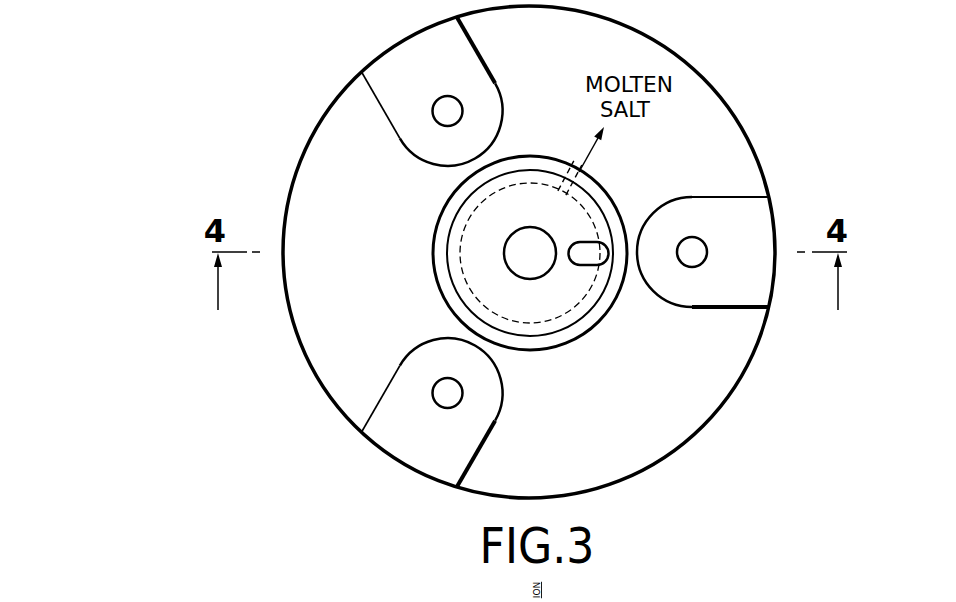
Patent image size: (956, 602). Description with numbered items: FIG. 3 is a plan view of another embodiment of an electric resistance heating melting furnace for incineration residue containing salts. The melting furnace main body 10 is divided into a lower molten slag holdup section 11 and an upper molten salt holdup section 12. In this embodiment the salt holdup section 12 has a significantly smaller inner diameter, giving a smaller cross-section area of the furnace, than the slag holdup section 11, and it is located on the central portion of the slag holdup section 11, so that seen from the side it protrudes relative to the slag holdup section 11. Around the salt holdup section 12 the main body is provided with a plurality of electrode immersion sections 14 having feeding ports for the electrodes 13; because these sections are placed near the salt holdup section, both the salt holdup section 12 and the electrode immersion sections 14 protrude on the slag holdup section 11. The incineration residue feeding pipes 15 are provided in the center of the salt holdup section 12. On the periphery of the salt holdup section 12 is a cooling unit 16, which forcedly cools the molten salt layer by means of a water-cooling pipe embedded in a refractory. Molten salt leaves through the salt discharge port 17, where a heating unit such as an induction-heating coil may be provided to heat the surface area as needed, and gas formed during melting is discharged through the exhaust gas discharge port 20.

The melting furnace main body 10 is at (298, 112).
The molten slag holdup section 11 is at (290, 190).
The molten salt holdup section 12 is at (467, 213).
The electrodes 13 is at (448, 96).
The electrode immersion sections 14 is at (499, 84).
The incineration residue feeding pipes 15 is at (547, 274).
The cooling unit 16 is at (442, 267).
The salt discharge port 17 is at (572, 165).
The exhaust gas discharge port 20 is at (598, 253).